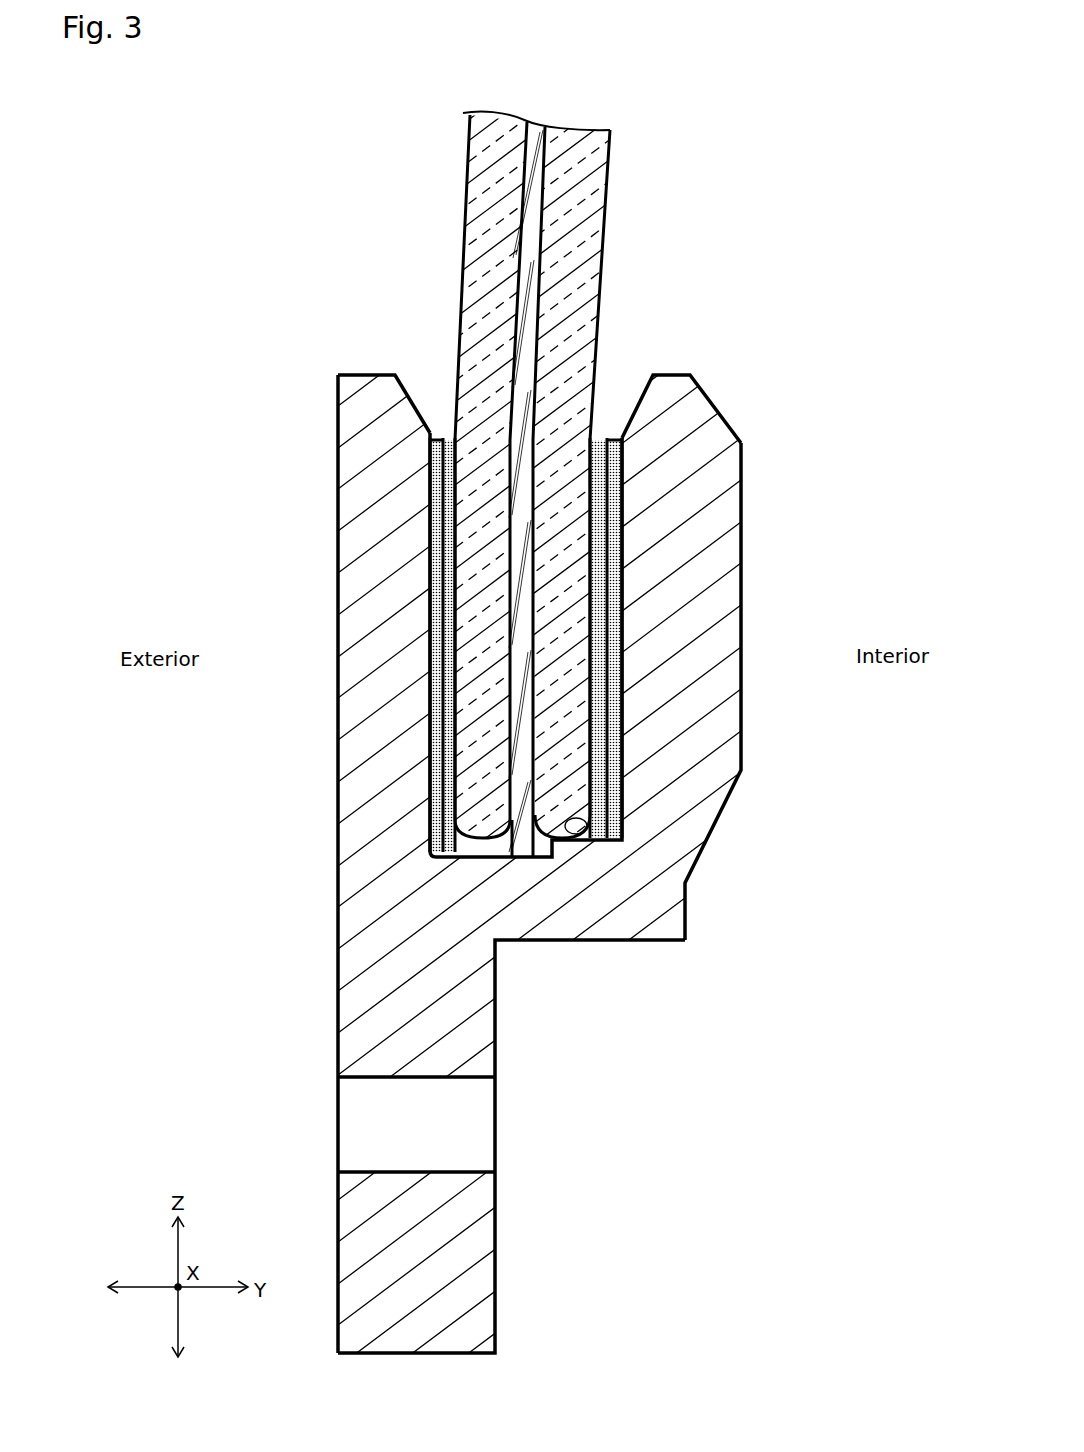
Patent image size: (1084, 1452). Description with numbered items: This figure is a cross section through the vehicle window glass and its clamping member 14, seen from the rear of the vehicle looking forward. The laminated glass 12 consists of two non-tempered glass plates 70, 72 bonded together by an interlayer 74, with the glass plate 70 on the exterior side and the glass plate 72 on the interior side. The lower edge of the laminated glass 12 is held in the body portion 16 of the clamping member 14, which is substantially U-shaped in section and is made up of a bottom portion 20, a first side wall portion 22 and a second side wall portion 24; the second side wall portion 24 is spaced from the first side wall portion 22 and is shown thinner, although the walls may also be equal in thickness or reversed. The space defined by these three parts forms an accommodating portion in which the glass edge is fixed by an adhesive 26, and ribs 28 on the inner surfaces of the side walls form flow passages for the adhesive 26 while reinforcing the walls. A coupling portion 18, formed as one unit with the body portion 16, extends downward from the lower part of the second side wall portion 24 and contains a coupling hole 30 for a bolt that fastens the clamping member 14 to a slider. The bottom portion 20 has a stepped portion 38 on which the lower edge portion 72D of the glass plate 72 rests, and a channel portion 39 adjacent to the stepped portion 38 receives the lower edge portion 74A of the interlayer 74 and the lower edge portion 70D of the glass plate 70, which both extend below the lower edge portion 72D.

The laminated glass 12 is at (517, 504).
The clamping member 14 is at (345, 366).
The body portion 16 is at (706, 366).
The coupling portion 18 is at (526, 757).
The bottom portion 20 is at (607, 917).
The first side wall portion 22 is at (738, 681).
The second side wall portion 24 is at (347, 720).
The adhesive 26 is at (443, 622).
The ribs 28 is at (428, 541).
The coupling hole 30 is at (387, 1079).
The stepped portion 38 is at (586, 822).
The channel portion 39 is at (432, 843).
The glass plate 70 is at (434, 504).
The lower edge portion of the glass plate 70D is at (478, 848).
The glass plate 72 is at (616, 504).
The lower edge portion of the glass plate 72D is at (575, 842).
The interlayer 74 is at (476, 563).
The lower edge portion of the interlayer 74A is at (522, 860).